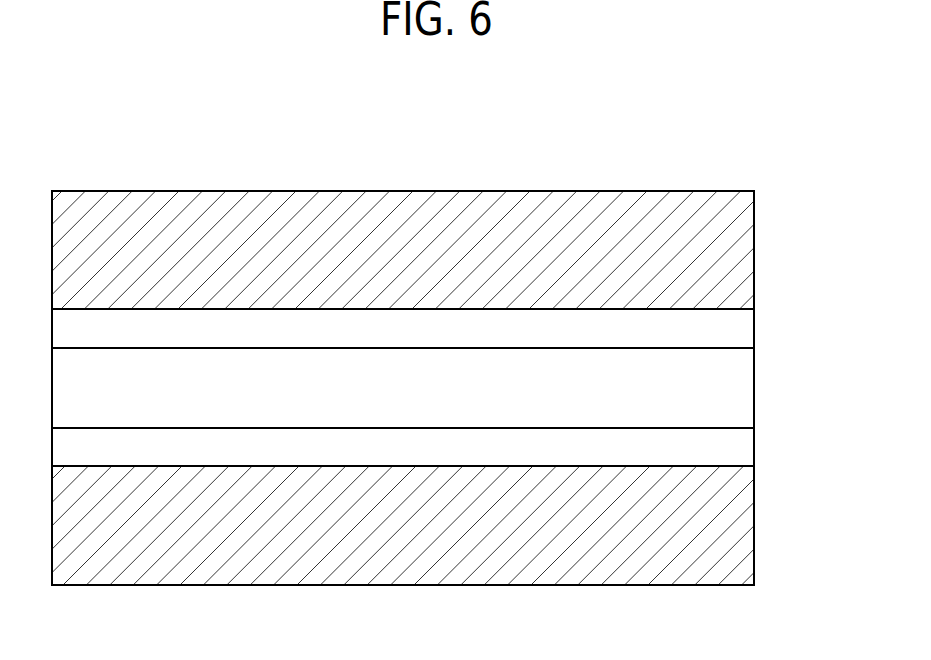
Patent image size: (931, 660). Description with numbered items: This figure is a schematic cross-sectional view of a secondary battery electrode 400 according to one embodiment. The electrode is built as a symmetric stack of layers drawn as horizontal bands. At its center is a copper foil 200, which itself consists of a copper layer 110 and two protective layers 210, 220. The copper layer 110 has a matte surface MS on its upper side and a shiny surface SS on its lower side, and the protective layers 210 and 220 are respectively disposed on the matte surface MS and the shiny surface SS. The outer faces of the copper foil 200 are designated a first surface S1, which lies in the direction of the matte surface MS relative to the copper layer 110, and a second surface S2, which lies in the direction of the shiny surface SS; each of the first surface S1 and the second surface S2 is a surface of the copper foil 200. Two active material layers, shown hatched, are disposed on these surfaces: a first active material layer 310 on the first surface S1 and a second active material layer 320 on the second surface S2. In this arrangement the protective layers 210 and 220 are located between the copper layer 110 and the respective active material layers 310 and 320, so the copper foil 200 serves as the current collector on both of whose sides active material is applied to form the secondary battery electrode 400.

The secondary battery electrode 400 is at (68, 106).
The first active material layer 310 is at (740, 245).
The second active material layer 320 is at (740, 520).
The copper foil 200 is at (840, 325).
The protective layer 210 is at (740, 329).
The copper layer 110 is at (740, 385).
The protective layer 220 is at (740, 446).
The matte surface MS is at (279, 348).
The first surface S1 is at (445, 309).
The shiny surface SS is at (279, 428).
The second surface S2 is at (444, 466).